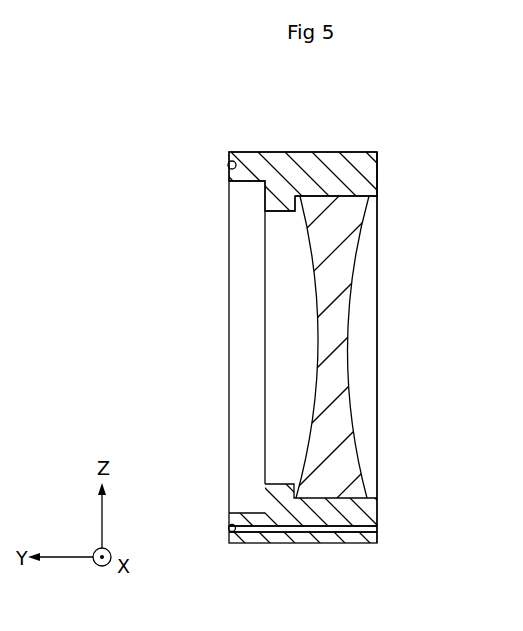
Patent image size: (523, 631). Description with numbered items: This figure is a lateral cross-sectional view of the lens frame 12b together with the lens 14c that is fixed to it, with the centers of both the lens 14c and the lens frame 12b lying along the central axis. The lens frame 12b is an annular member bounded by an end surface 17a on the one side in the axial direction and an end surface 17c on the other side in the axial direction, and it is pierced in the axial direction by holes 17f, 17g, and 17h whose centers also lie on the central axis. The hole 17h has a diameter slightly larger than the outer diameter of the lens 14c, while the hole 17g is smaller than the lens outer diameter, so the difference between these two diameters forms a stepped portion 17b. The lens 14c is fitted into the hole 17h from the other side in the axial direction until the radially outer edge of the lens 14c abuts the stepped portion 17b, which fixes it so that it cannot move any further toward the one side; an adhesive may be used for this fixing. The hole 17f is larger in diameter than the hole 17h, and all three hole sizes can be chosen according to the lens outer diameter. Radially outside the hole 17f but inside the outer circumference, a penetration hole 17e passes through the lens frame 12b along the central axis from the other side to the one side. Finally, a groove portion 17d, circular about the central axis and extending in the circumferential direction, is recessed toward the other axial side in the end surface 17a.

The lens frame 12b is at (350, 162).
The lens 14c is at (345, 411).
The end surface 17a is at (229, 533).
The stepped portion 17b is at (292, 491).
The end surface 17c is at (378, 514).
The groove portion 17d is at (227, 165).
The penetration hole 17e is at (338, 529).
The hole 17f is at (253, 188).
The hole 17g is at (290, 222).
The hole 17h is at (331, 197).